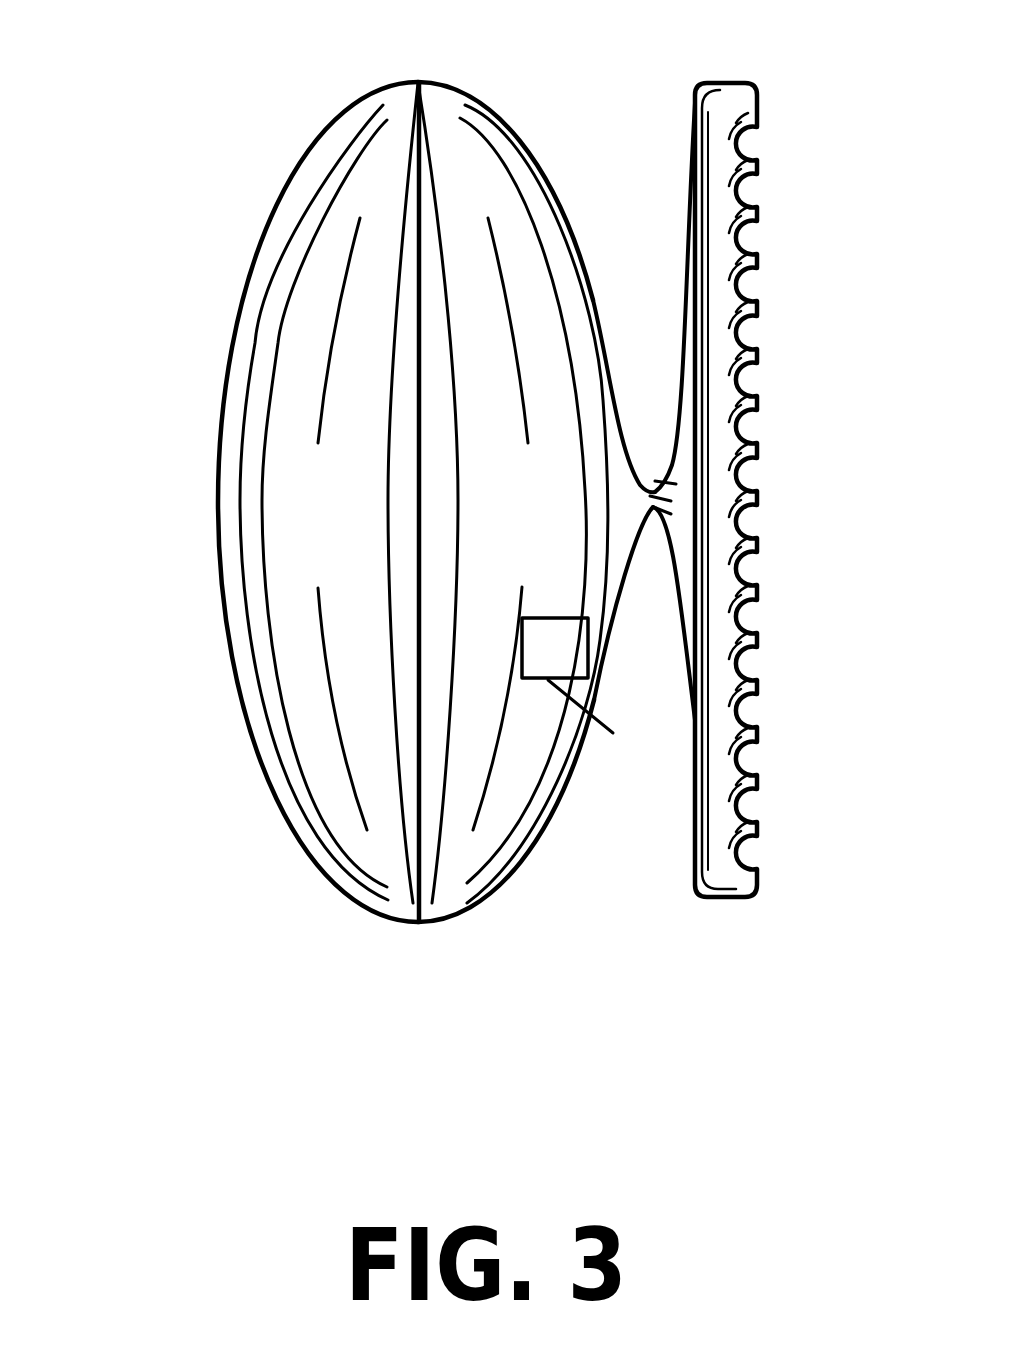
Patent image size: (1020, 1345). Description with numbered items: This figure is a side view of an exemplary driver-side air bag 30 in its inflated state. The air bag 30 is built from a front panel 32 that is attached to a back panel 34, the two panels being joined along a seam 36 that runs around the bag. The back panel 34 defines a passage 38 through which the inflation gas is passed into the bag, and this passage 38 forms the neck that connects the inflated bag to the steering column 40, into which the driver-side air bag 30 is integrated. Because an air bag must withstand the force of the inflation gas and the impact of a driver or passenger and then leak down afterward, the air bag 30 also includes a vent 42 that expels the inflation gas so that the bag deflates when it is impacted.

The driver-side air bag 30 is at (205, 205).
The front panel 32 is at (250, 645).
The back panel 34 is at (513, 797).
The seam 36 is at (410, 892).
The passage 38 is at (660, 493).
The steering column 40 is at (772, 48).
The vent 42 is at (580, 620).